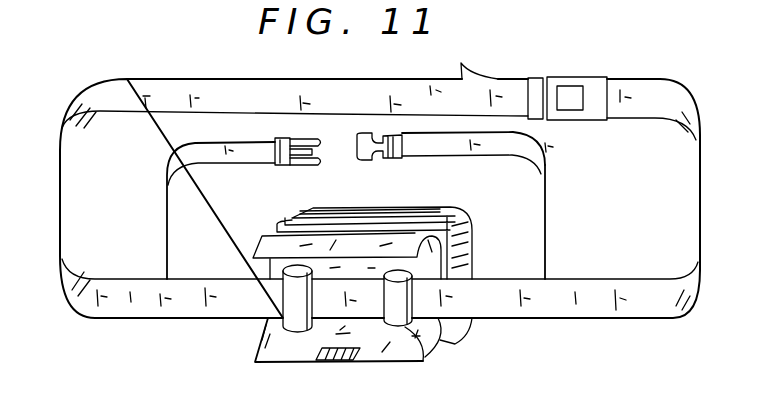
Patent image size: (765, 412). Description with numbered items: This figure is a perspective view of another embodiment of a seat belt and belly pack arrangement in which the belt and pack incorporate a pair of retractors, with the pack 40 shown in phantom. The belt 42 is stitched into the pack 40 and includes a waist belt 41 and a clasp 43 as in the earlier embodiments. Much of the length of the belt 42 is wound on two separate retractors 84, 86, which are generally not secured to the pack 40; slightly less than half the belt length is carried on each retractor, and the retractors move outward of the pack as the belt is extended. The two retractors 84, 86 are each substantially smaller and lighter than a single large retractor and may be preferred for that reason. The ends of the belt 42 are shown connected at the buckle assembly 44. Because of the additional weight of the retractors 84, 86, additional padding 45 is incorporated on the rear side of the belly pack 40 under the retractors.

The pack 40 is at (500, 219).
The waist belt 41 is at (547, 224).
The belt 42 is at (686, 60).
The clasp 43 is at (382, 176).
The buckle assembly 44 is at (603, 83).
The padding 45 is at (388, 212).
The retractor 84 is at (295, 315).
The retractor 86 is at (423, 361).